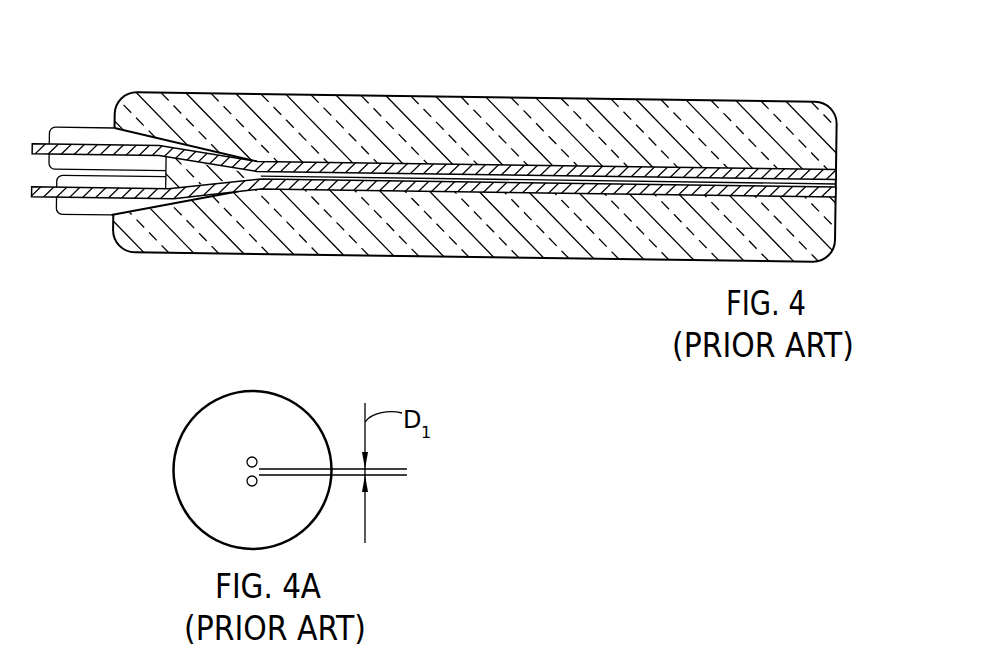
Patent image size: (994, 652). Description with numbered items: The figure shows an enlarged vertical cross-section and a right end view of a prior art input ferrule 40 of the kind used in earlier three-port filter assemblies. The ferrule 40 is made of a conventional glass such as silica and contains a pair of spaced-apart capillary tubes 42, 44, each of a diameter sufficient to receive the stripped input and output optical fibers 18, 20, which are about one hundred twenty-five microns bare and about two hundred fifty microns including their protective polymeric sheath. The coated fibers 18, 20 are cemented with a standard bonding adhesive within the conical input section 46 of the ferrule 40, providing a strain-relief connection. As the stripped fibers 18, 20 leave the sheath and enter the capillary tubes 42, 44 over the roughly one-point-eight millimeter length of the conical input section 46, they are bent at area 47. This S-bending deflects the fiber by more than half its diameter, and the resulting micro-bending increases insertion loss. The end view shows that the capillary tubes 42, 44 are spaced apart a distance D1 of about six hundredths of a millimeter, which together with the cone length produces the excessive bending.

In FIG. 4, the input optical fiber 18 is at (68, 113).
In FIG. 4, the output optical fiber 20 is at (79, 233).
In FIG. 4, the prior art input ferrule 40 is at (610, 85).
In FIG. 4A, the prior art input ferrule 40 is at (186, 401).
In FIG. 4, the capillary tube 42 is at (452, 163).
In FIG. 4A, the capillary tube 42 is at (253, 457).
In FIG. 4, the capillary tube 44 is at (518, 193).
In FIG. 4A, the capillary tube 44 is at (248, 484).
In FIG. 4, the conical input section 46 is at (151, 130).
In FIG. 4, the bending area 47 is at (209, 128).